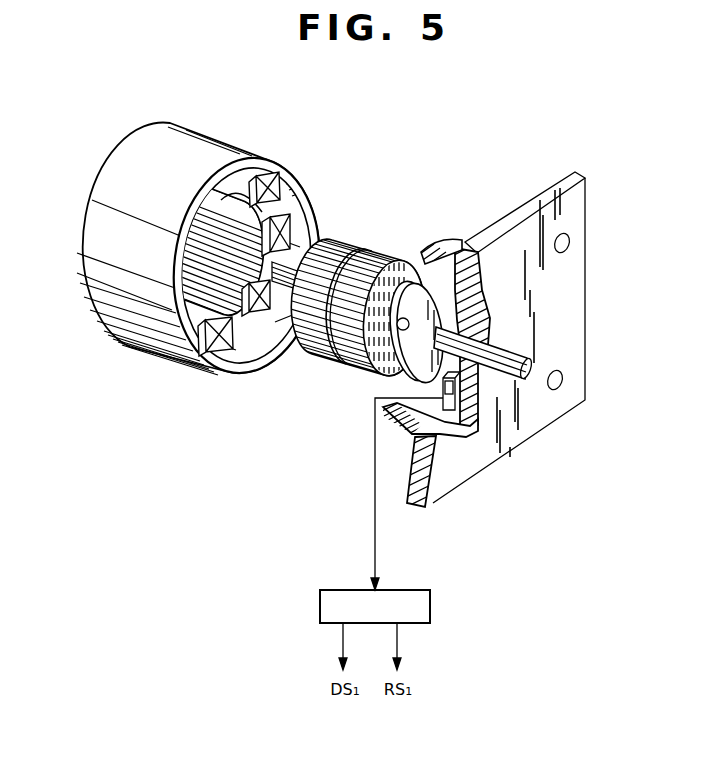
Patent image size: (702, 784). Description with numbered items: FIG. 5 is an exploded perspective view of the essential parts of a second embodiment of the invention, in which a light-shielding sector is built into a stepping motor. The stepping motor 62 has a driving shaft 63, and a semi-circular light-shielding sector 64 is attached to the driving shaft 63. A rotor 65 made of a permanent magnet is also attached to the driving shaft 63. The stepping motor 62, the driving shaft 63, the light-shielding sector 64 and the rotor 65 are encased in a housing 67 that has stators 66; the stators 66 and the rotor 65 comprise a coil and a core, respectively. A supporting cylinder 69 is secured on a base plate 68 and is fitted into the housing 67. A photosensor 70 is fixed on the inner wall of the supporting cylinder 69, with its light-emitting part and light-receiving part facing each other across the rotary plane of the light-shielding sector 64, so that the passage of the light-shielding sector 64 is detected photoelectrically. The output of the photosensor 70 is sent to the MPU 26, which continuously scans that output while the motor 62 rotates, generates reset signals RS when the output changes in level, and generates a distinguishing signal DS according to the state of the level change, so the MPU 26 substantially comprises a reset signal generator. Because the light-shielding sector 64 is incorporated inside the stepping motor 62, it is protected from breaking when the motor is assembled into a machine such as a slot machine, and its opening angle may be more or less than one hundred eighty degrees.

The stepping motor 62 is at (204, 271).
The driving shaft 63 is at (508, 356).
The light-shielding sector 64 is at (418, 350).
The rotor 65 is at (338, 243).
The stators 66 is at (276, 180).
The housing 67 is at (213, 138).
The base plate 68 is at (560, 177).
The supporting cylinder 69 is at (441, 250).
The photosensor 70 is at (458, 432).
The MPU 26 is at (432, 609).